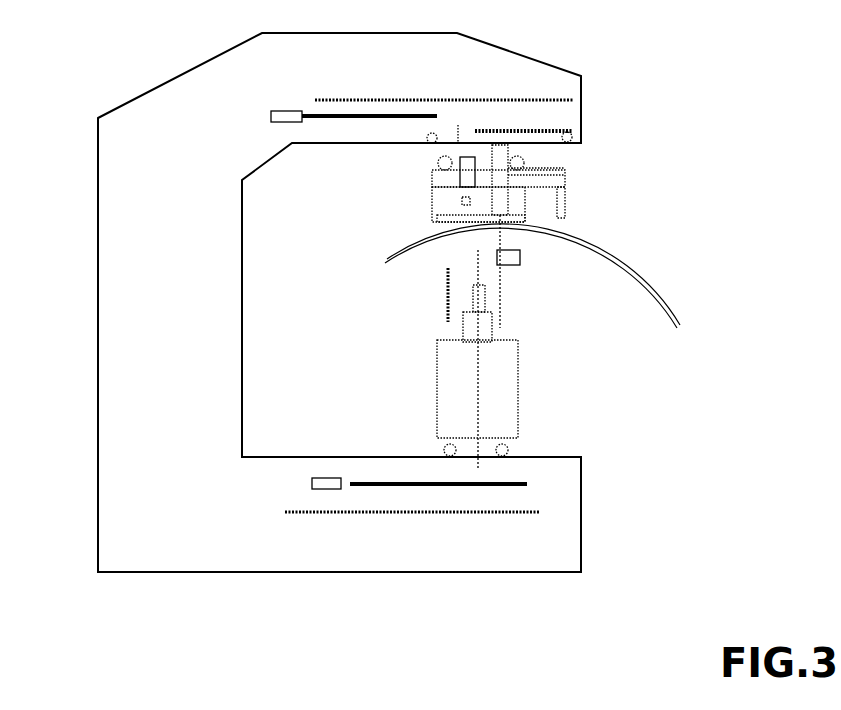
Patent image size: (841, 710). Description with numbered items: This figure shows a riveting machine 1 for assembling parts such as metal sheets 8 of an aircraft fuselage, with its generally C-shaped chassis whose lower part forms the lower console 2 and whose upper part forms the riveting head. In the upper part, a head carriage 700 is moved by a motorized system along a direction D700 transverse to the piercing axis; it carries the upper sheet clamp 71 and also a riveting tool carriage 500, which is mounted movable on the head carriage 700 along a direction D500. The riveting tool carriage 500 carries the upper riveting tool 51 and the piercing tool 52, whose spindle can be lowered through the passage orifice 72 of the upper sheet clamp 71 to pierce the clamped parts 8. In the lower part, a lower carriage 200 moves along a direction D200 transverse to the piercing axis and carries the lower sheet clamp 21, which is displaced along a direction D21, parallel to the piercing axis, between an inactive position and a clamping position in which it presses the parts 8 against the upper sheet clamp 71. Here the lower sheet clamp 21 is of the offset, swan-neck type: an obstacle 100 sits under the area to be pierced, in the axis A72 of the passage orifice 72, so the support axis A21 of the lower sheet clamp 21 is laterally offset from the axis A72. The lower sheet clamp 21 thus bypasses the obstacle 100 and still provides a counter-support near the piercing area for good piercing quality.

The machine 1 is at (110, 150).
The tool unit 2 is at (408, 342).
The metal sheets 8 is at (635, 280).
The lower sheet clamp 21 is at (485, 300).
The upper riveting tool 51 is at (462, 173).
The piercing tool 52 is at (545, 143).
The upper sheet clamp 71 is at (437, 220).
The passage orifice 72 is at (540, 217).
The obstacle 100 is at (520, 262).
The lower carriage 200 is at (390, 448).
The riveting tool carriage 500 is at (467, 192).
The head carriage 700 is at (567, 170).
The support axis of the lower sheet clamp A21 is at (478, 268).
The axis of the passage orifice A72 is at (503, 275).
The displacement direction of the lower sheet clamp D21 is at (445, 299).
The displacement direction of the lower carriage D200 is at (392, 512).
The displacement direction of the riveting tool carriage D500 is at (510, 133).
The displacement direction of the head carriage D700 is at (317, 100).